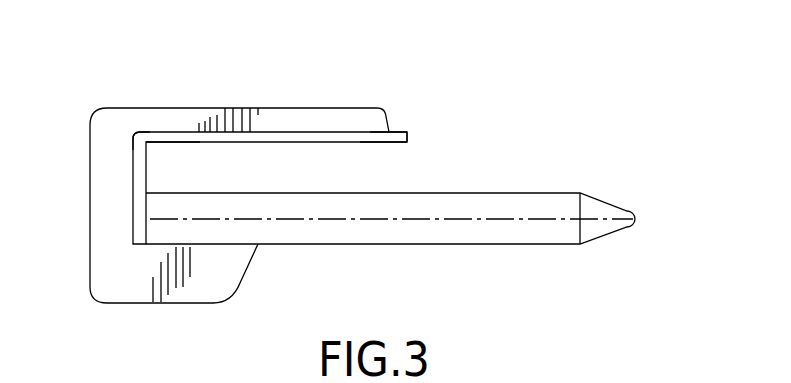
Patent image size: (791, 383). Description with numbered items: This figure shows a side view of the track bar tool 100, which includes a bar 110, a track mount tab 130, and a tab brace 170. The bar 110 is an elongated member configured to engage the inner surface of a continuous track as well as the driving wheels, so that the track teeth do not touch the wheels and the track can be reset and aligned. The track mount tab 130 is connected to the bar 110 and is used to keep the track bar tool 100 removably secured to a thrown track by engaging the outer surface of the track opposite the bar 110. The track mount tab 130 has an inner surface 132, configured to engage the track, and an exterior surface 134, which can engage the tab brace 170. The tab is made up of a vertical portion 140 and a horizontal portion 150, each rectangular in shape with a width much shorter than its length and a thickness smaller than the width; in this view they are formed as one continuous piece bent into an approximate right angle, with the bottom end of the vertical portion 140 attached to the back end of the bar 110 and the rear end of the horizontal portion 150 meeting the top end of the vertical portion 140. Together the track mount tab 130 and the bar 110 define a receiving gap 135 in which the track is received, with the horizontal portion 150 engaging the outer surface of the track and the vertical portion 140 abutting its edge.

The track bar tool 100 is at (682, 230).
The bar 110 is at (222, 256).
The track mount tab 130 is at (278, 118).
The inner surface 132 is at (172, 158).
The exterior surface 134 is at (393, 110).
The receiving gap 135 is at (412, 163).
The vertical portion 140 is at (113, 189).
The horizontal portion 150 is at (178, 120).
The tab brace 170 is at (224, 95).